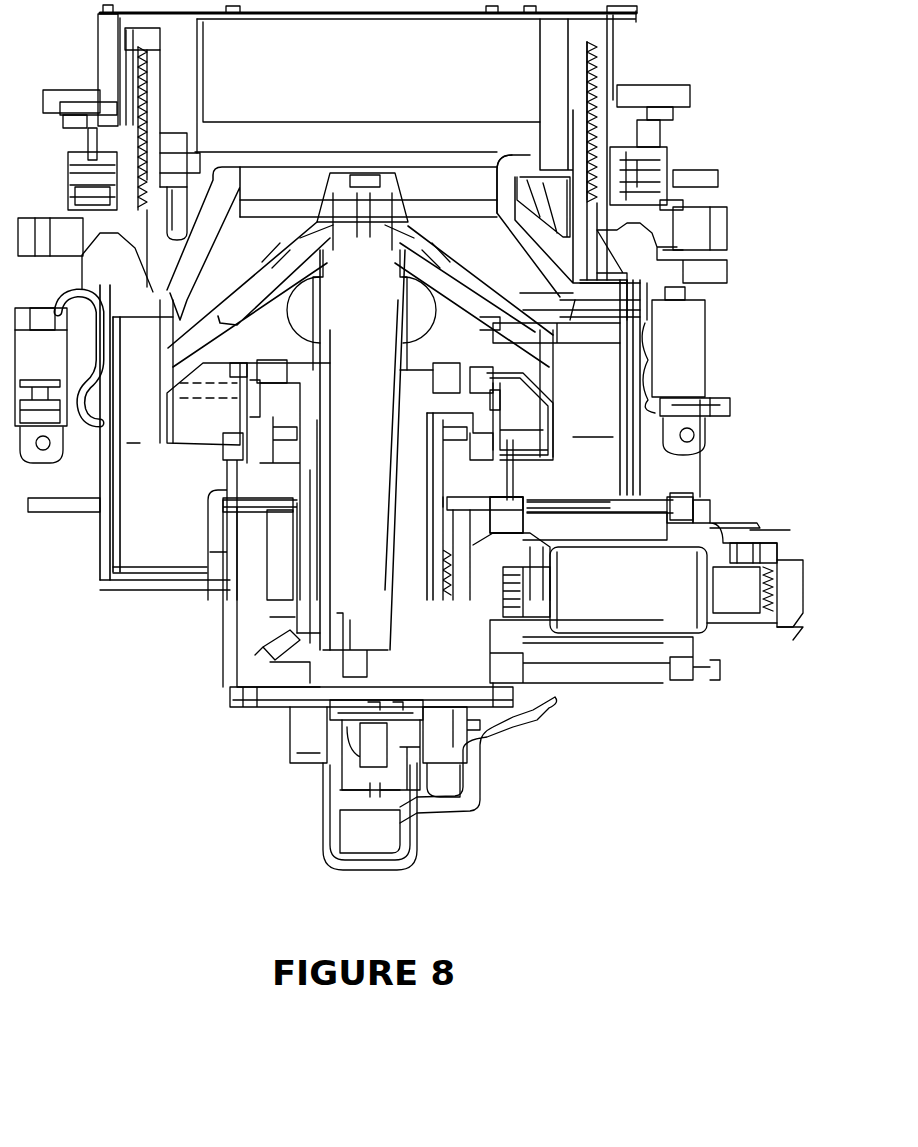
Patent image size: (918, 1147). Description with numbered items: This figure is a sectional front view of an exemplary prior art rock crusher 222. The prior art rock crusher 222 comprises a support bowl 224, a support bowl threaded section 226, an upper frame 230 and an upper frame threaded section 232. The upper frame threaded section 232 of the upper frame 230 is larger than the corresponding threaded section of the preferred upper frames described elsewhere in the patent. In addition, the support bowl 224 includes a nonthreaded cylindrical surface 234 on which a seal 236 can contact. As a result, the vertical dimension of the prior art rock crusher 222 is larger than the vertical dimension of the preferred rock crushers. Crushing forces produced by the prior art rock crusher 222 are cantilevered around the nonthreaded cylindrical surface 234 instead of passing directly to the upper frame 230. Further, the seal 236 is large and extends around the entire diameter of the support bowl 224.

The exemplary prior art rock crusher 222 is at (421, 437).
The support bowl 224 is at (578, 190).
The support bowl threaded section 226 is at (597, 68).
The upper frame 230 is at (633, 215).
The upper frame threaded section 232 is at (593, 180).
The nonthreaded cylindrical surface 234 is at (587, 233).
The seal 236 is at (647, 290).